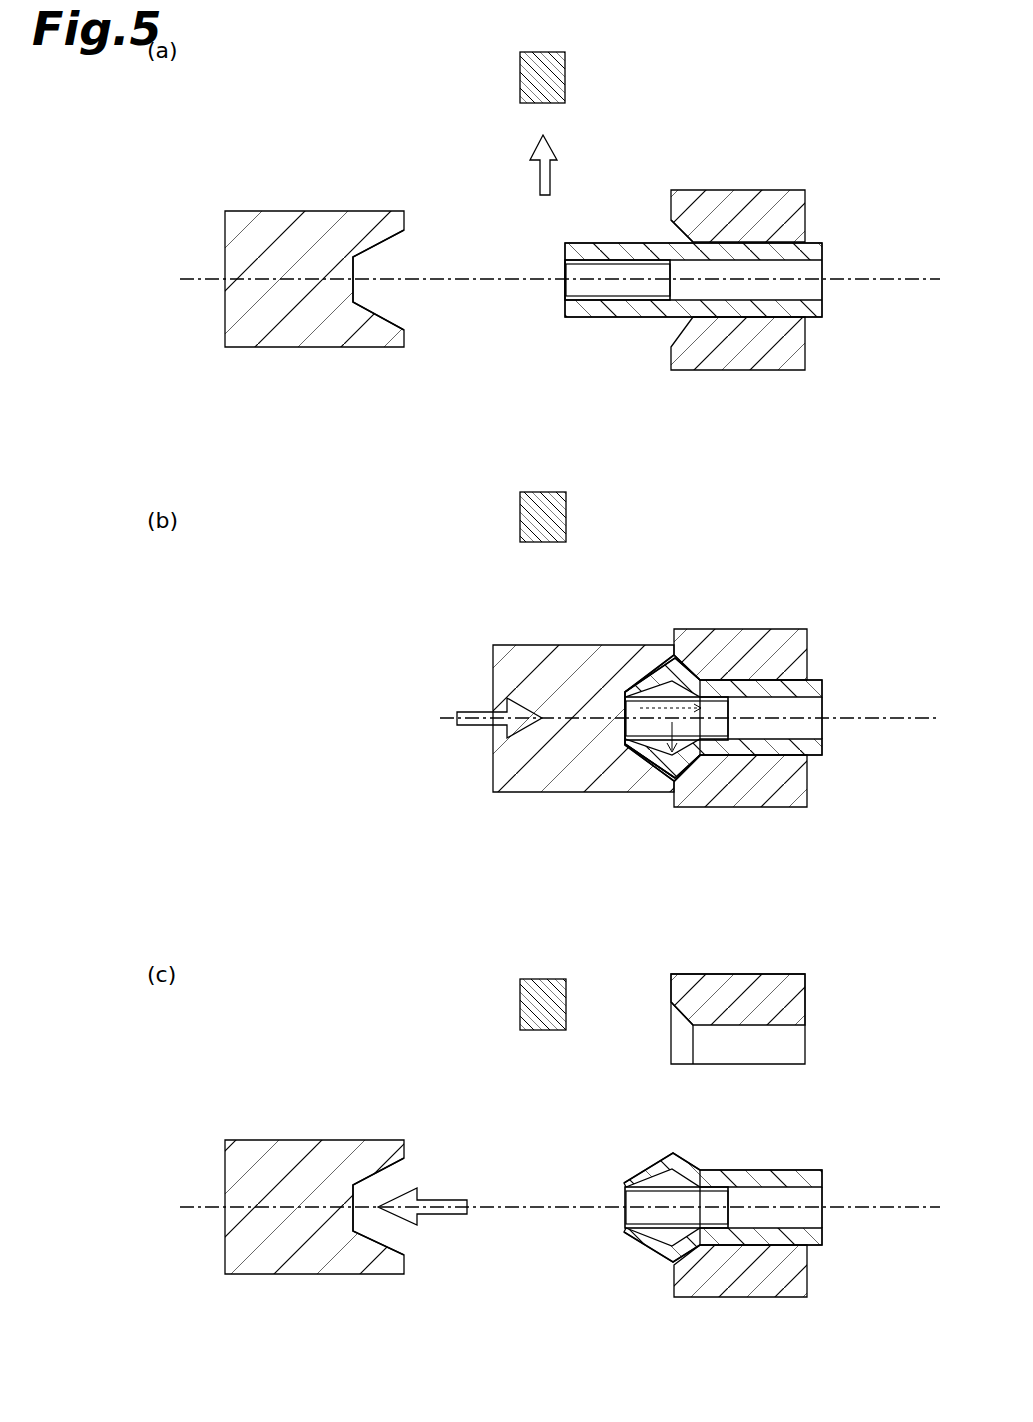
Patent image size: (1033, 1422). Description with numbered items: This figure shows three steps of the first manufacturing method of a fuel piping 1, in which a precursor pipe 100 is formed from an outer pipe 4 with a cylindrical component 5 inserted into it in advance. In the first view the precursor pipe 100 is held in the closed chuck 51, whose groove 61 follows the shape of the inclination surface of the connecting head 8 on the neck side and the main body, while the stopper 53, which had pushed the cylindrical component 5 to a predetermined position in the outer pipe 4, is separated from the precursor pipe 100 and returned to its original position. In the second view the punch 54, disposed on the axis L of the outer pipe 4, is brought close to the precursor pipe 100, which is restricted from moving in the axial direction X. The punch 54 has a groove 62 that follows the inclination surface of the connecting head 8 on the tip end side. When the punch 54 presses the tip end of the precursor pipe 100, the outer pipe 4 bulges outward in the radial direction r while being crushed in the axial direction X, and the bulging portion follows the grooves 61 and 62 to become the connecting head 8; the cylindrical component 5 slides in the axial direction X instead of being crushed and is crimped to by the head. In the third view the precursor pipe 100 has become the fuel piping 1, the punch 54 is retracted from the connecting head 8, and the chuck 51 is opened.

The fuel piping 1 is at (830, 675).
The precursor pipe 100 is at (826, 240).
The outer pipe 4 is at (640, 317).
The cylindrical component 5 is at (590, 300).
The connecting head 8 is at (648, 672).
The chuck 51 is at (751, 190).
The stopper 53 is at (566, 74).
The punch 54 is at (292, 211).
The groove 61 is at (671, 222).
The groove 62 is at (398, 236).
The axis L is at (915, 279).
The axial direction X is at (638, 762).
The radial direction r is at (664, 740).